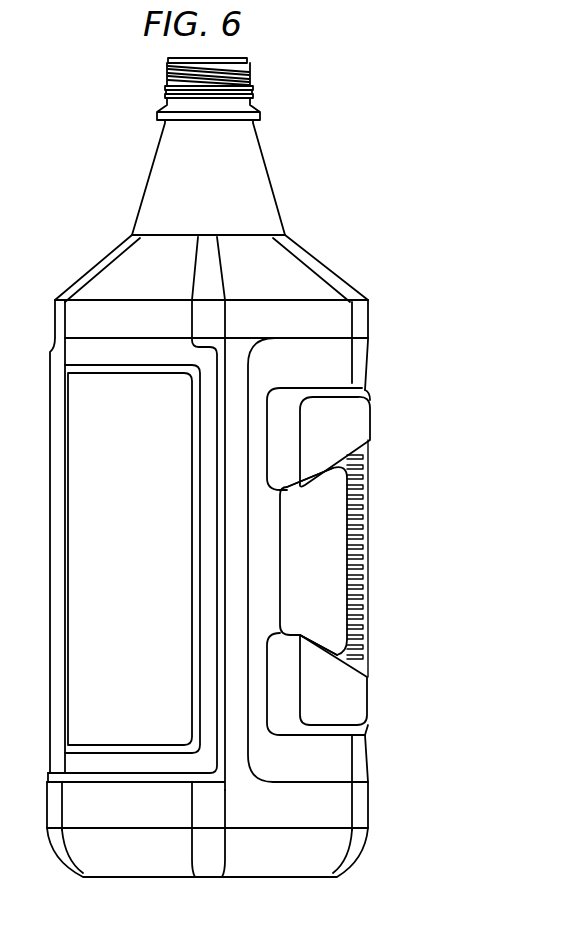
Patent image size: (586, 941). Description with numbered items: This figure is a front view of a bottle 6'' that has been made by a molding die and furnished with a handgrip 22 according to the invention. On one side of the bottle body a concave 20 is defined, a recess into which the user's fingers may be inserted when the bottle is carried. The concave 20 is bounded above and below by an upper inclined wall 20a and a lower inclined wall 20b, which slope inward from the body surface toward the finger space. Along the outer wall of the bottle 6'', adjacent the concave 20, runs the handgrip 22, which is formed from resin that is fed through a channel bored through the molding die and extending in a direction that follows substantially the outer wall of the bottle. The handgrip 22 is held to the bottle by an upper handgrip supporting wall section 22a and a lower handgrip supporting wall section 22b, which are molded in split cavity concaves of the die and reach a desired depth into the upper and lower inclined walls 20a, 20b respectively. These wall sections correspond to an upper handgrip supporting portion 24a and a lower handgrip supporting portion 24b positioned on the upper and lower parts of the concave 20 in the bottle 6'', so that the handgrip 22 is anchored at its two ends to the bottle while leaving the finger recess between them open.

The bottle 6'' is at (207, 467).
The concave 20 is at (280, 553).
The upper inclined wall 20a is at (285, 490).
The lower inclined wall 20b is at (285, 633).
The handgrip 22 is at (370, 547).
The upper handgrip supporting wall section 22a is at (372, 425).
The lower handgrip supporting wall section 22b is at (372, 715).
The upper handgrip supporting portion 24a is at (360, 402).
The lower handgrip supporting portion 24b is at (342, 695).